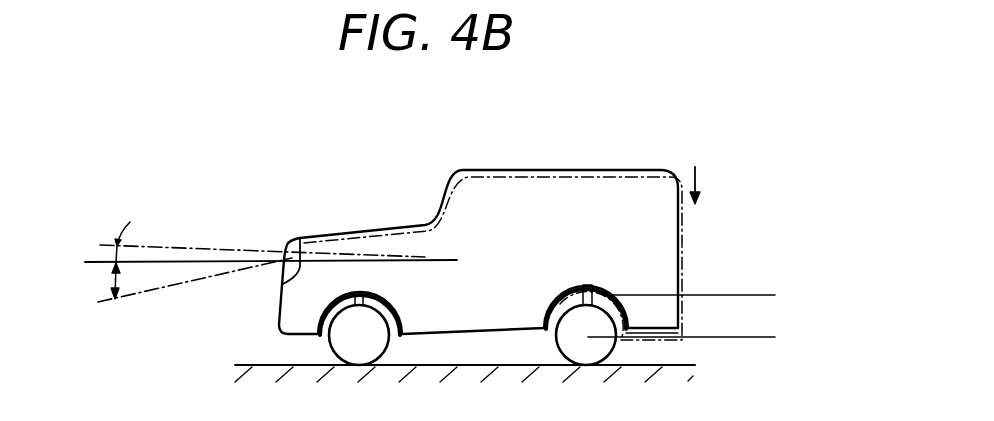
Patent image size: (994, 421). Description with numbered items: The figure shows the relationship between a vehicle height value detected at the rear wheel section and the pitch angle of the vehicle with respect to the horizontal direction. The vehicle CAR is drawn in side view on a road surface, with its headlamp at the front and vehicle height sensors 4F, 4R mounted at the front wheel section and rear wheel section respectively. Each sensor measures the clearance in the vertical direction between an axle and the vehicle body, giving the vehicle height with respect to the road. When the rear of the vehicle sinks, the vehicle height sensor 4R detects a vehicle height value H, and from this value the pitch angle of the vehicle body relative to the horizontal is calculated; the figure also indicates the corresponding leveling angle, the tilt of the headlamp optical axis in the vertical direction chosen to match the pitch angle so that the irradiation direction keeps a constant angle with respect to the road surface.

The vehicle CAR is at (505, 171).
The vehicle height sensor 4F is at (365, 292).
The vehicle height sensor 4R is at (587, 284).
The vehicle height value H is at (758, 295).